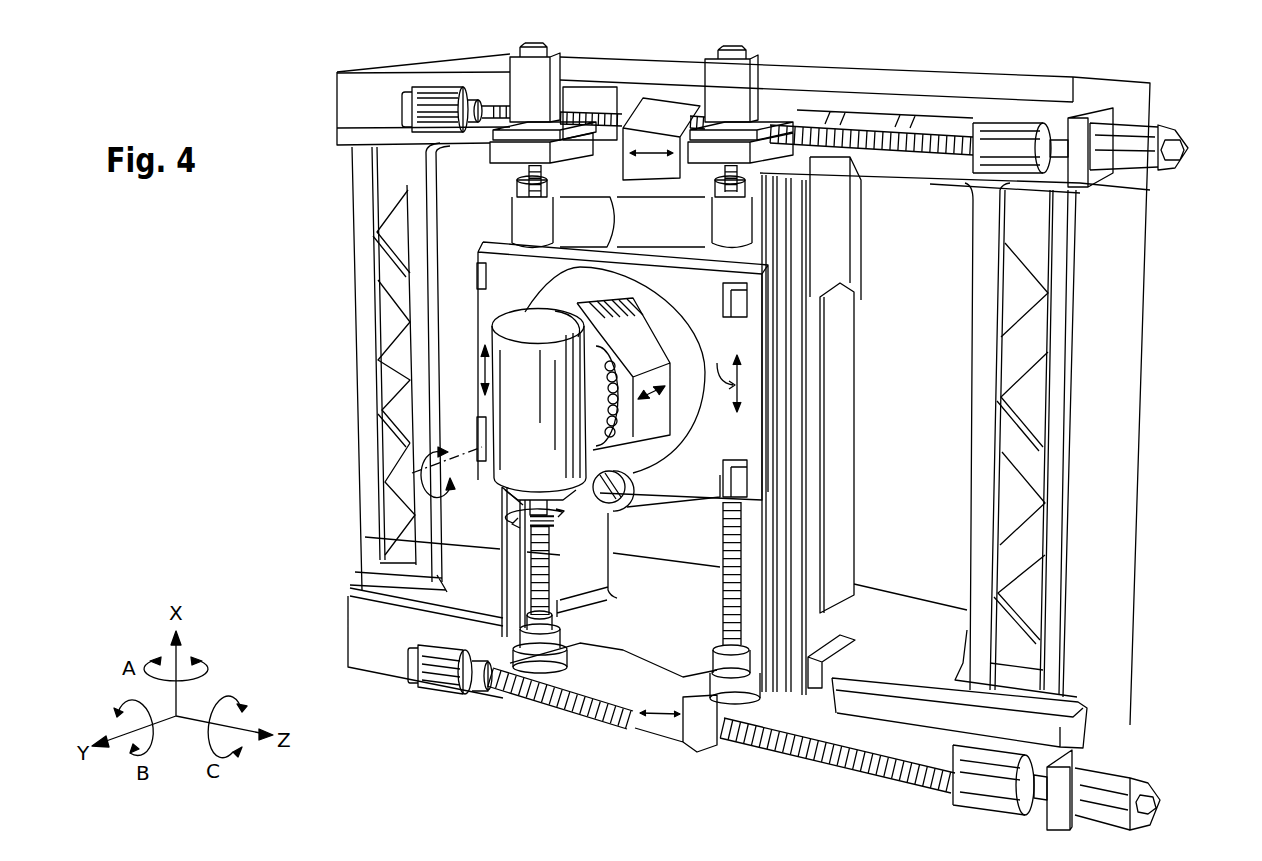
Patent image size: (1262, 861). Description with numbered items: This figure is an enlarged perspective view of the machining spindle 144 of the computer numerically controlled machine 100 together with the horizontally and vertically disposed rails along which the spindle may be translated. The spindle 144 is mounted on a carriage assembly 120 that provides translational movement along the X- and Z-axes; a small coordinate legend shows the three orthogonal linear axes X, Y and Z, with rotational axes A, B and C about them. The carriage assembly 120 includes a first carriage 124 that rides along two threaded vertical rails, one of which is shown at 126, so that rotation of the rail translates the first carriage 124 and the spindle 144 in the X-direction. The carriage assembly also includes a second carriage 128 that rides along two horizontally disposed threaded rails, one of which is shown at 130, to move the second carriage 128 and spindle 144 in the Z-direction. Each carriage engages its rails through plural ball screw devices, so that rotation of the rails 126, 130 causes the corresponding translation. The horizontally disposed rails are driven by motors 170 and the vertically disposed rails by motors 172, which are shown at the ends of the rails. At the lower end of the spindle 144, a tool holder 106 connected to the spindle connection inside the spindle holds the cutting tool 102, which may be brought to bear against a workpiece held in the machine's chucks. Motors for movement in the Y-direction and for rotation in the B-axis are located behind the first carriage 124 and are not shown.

The computer numerically controlled machine 100 is at (788, 768).
The cutting tool 102 is at (556, 530).
The tool holder 106 is at (623, 507).
The carriage assembly 120 is at (866, 372).
The first carriage 124 is at (747, 438).
The threaded vertical rail 126 is at (740, 540).
The second carriage 128 is at (855, 203).
The horizontally disposed threaded rail 130 is at (875, 127).
The spindle 144 is at (512, 401).
The motor for horizontally disposed rails 170 is at (420, 108).
The motor for vertically disposed rails 172 is at (700, 82).